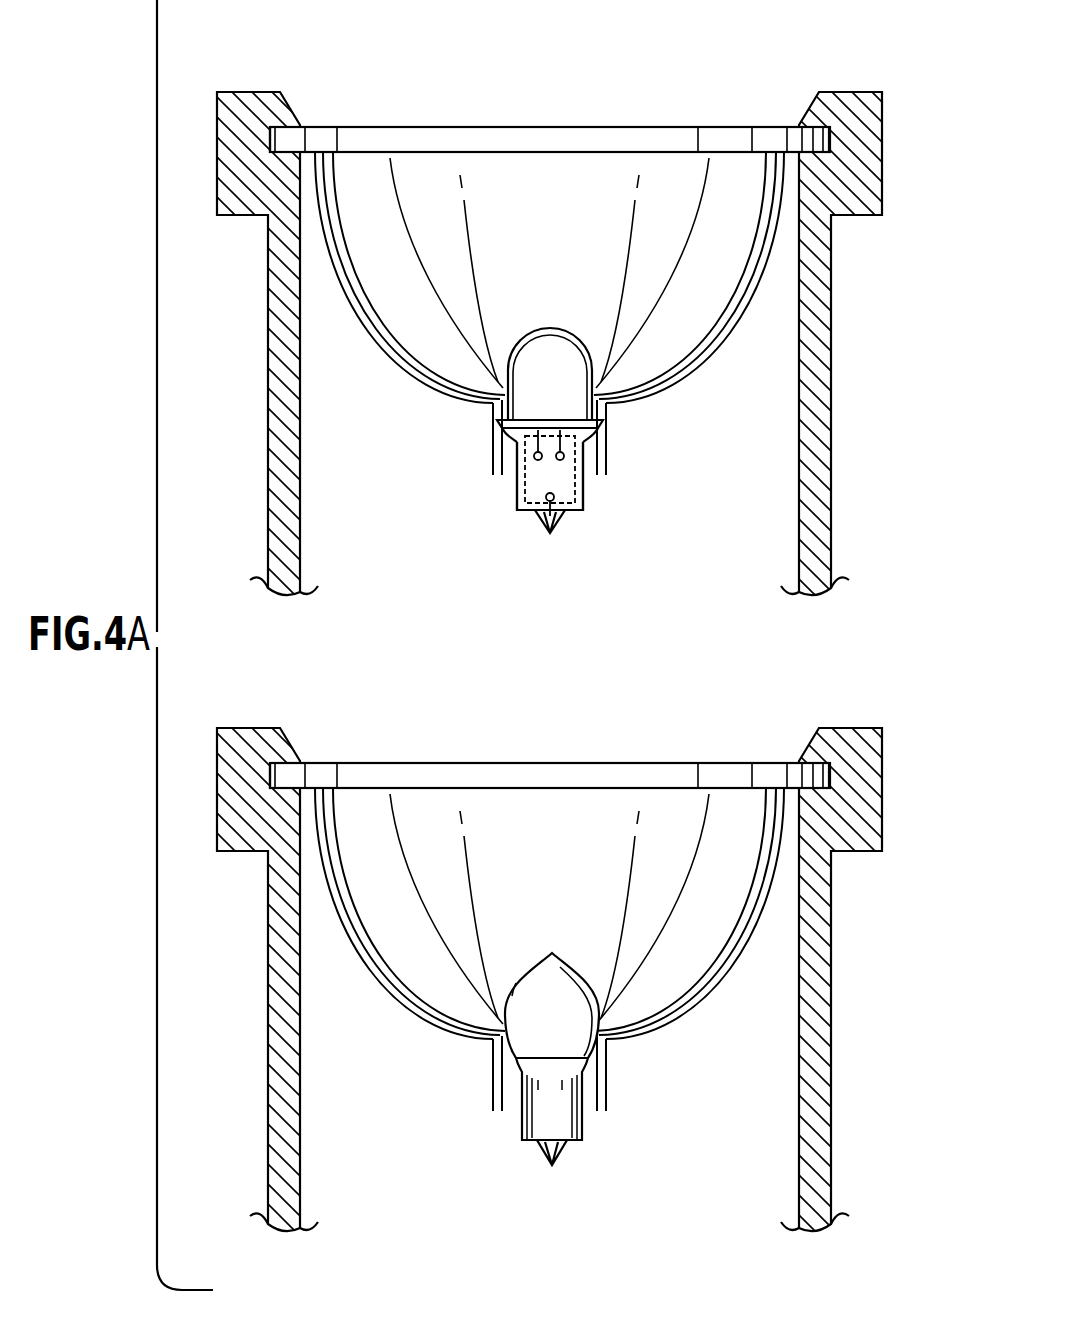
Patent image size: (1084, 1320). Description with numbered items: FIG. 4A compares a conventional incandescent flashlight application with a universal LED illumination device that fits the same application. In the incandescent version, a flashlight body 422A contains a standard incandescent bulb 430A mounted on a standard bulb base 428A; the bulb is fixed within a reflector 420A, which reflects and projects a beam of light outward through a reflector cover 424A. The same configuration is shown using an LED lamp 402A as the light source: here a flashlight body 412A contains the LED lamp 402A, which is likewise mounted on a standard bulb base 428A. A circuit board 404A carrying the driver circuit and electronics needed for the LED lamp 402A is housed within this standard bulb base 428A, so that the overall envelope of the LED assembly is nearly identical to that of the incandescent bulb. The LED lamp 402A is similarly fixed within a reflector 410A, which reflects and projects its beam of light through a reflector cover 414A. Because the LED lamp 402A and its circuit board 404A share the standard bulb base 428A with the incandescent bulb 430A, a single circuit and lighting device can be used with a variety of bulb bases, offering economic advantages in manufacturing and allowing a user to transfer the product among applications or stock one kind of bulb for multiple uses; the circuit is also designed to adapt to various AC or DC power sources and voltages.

The LED lamp 402A is at (555, 328).
The circuit board 404A is at (523, 473).
The reflector 410A is at (678, 375).
The flashlight body 412A is at (812, 108).
The reflector cover 414A is at (585, 127).
The reflector 420A is at (418, 1002).
The flashlight body 422A is at (301, 1133).
The reflector cover 424A is at (448, 763).
The standard bulb base 428A is at (583, 482).
The standard incandescent bulb 430A is at (583, 974).